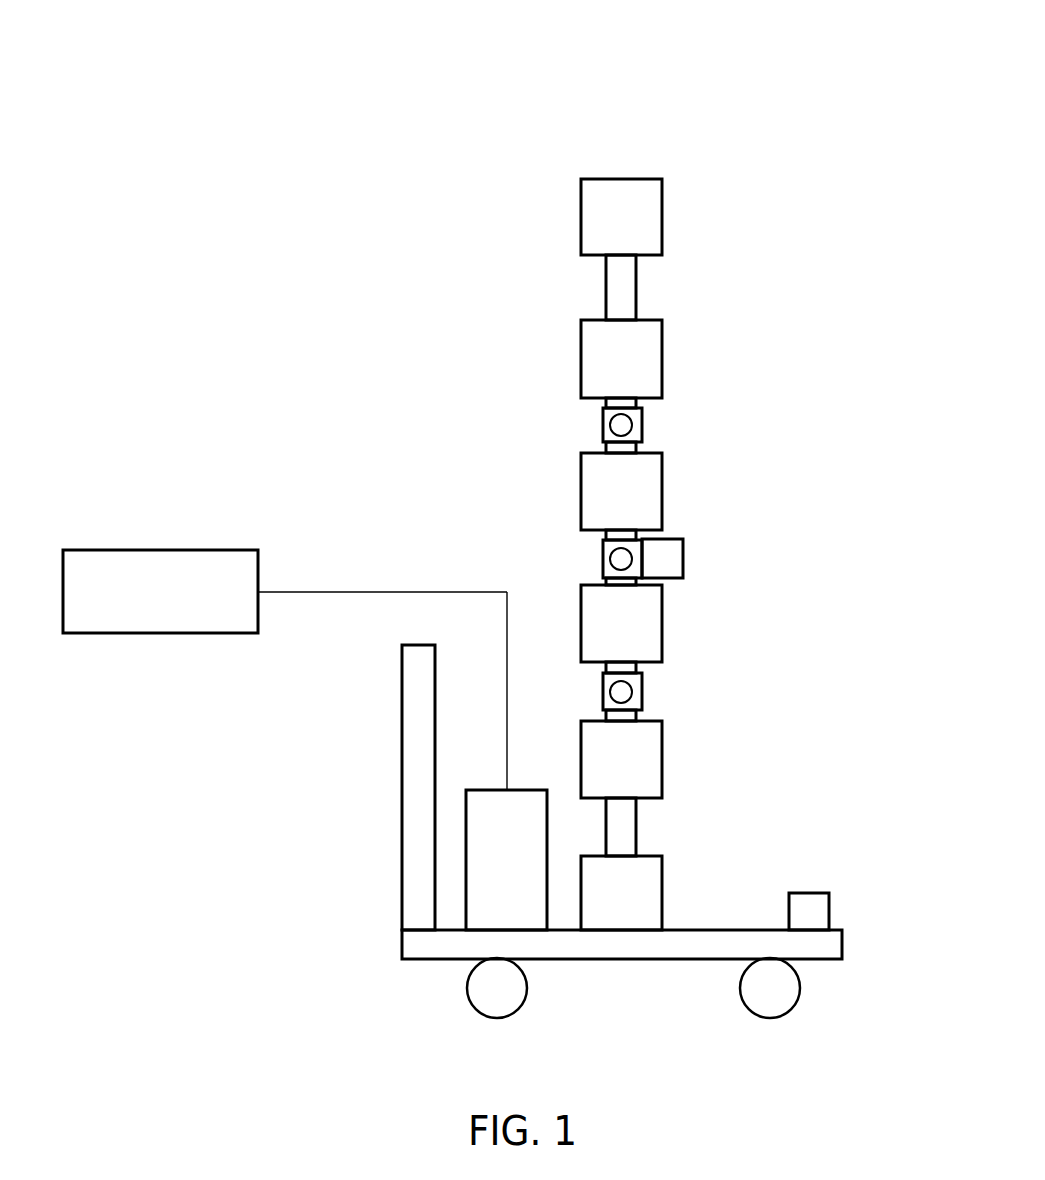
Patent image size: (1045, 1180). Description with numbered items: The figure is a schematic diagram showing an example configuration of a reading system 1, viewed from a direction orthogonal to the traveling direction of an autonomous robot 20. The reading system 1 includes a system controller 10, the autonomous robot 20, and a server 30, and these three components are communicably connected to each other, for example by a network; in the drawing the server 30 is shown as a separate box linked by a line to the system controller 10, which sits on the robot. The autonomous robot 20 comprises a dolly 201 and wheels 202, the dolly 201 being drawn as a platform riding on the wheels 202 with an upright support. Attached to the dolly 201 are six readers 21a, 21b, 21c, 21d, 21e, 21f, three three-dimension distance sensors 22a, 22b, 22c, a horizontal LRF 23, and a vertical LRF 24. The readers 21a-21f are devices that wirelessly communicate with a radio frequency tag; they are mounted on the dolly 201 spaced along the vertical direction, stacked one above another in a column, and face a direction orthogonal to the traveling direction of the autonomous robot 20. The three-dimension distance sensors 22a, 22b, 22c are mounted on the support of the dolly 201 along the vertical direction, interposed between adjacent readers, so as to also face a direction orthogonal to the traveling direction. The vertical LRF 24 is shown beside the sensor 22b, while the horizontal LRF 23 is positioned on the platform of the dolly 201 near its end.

The reading system 1 is at (775, 122).
The system controller 10 is at (525, 789).
The autonomous robot 20 is at (637, 285).
The reader 21a is at (663, 215).
The reader 21b is at (663, 356).
The reader 21c is at (663, 492).
The reader 21d is at (663, 622).
The reader 21e is at (663, 752).
The reader 21f is at (663, 890).
The three-dimension distance sensor 22a is at (643, 424).
The three-dimension distance sensor 22b is at (601, 562).
The three-dimension distance sensor 22c is at (643, 690).
The horizontal LRF 23 is at (830, 910).
The vertical LRF 24 is at (684, 558).
The server 30 is at (155, 549).
The dolly 201 is at (402, 742).
The wheels 202 is at (466, 989).